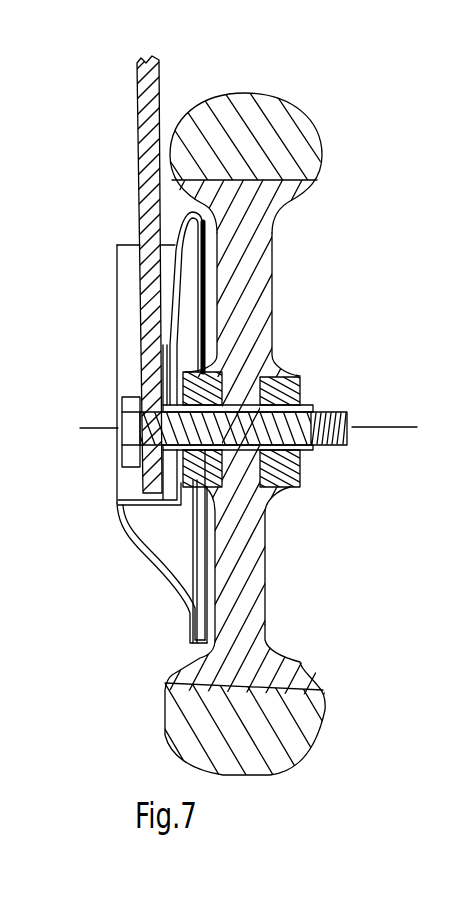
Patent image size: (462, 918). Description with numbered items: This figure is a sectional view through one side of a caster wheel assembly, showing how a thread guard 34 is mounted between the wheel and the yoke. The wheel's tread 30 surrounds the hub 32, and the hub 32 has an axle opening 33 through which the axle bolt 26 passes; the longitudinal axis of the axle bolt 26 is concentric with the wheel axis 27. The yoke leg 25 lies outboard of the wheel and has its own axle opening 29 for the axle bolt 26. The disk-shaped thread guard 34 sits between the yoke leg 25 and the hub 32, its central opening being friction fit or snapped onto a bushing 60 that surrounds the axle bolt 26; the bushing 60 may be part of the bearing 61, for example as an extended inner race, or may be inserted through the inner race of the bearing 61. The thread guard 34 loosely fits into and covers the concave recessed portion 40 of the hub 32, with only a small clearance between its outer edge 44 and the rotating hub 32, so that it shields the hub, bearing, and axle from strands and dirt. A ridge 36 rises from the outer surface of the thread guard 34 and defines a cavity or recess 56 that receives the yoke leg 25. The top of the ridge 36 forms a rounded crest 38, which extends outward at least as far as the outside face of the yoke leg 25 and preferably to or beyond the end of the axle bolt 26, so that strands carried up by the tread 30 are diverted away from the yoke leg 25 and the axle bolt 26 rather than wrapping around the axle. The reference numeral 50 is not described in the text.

The yoke leg 25 is at (142, 182).
The tread 30 is at (305, 133).
The hub 32 is at (280, 193).
The concave recessed portion 40 is at (210, 286).
The outer edge 44 is at (185, 657).
The bracket 50 is at (128, 272).
The crest 38 is at (113, 317).
The cavity or recess 56 is at (133, 484).
The ridge 36 is at (133, 541).
The thread guard 34 is at (175, 605).
The axle bolt 26 is at (342, 446).
The axle opening 29 is at (138, 428).
The wheel axis 27 is at (413, 421).
The bearing 61 is at (295, 375).
The bushing 60 is at (306, 403).
The axle opening 33 is at (302, 450).